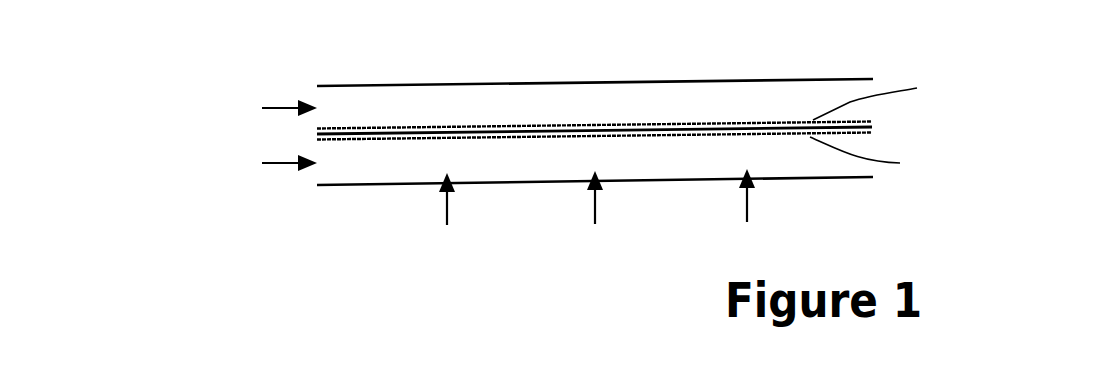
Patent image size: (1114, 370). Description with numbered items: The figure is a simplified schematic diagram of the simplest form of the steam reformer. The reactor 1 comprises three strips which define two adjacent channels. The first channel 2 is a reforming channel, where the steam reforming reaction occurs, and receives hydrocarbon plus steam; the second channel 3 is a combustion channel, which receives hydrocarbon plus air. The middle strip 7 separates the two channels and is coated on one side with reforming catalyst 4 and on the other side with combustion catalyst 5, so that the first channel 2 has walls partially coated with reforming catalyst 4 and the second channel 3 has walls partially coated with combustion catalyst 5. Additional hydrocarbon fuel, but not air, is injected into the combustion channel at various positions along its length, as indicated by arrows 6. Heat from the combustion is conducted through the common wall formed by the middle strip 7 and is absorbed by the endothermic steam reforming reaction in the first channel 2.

The reactor 1 is at (455, 54).
The first channel 2 is at (528, 107).
The second channel 3 is at (422, 160).
The reforming catalyst 4 is at (808, 122).
The combustion catalyst 5 is at (812, 140).
The arrows 6 is at (447, 210).
The middle strip 7 is at (620, 125).